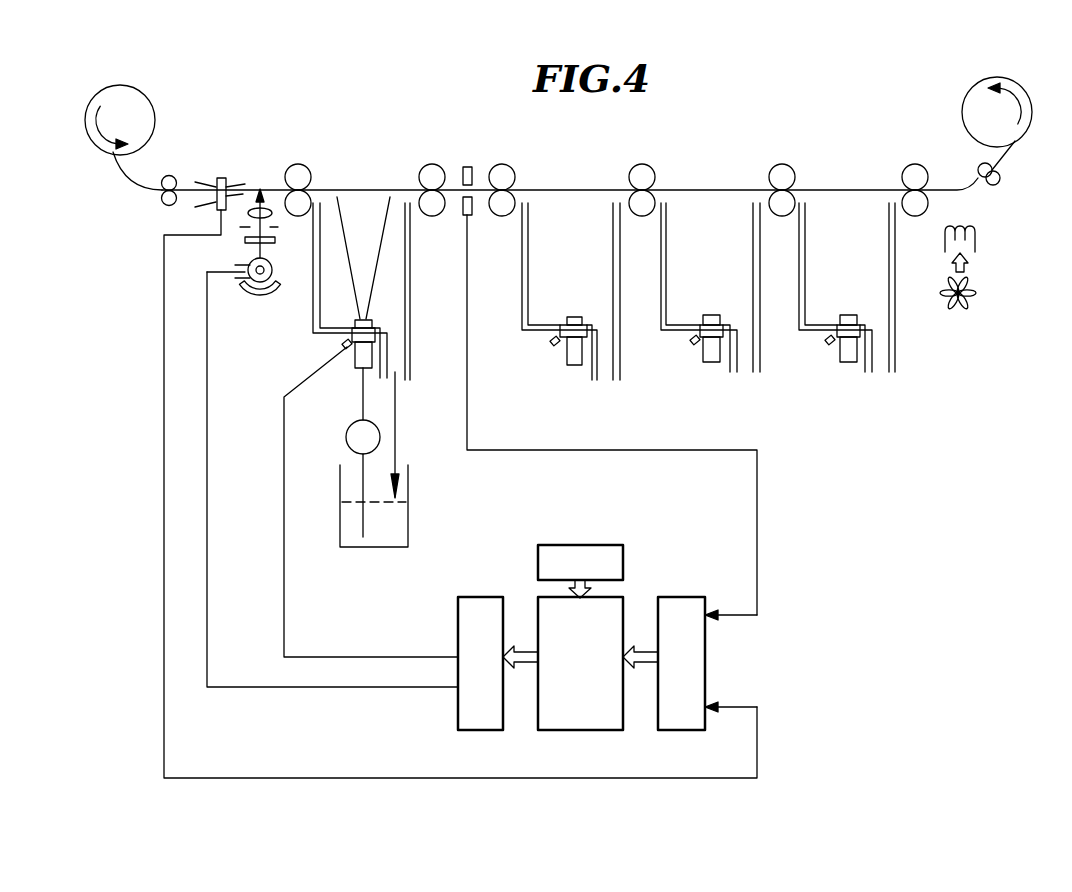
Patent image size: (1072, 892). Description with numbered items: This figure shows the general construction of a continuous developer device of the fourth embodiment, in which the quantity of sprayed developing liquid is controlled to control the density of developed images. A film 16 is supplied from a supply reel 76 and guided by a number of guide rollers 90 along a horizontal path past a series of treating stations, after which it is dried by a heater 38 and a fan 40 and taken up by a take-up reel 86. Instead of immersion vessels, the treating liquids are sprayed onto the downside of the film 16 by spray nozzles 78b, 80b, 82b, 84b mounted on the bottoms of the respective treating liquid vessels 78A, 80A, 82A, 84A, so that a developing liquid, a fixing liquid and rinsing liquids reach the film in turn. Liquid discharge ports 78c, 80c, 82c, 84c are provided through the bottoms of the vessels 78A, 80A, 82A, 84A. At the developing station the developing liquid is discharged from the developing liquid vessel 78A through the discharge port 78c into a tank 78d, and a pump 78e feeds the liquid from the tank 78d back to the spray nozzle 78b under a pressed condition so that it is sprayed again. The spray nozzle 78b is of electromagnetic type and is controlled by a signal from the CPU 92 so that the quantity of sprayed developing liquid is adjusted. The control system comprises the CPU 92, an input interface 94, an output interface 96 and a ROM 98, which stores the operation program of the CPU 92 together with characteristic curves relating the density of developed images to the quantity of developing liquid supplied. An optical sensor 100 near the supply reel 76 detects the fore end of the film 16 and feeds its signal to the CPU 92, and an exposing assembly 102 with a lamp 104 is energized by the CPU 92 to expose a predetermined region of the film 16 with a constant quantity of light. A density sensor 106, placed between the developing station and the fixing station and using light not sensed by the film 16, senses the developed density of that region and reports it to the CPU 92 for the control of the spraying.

The film 16 is at (1008, 157).
The heater 38 is at (977, 240).
The fan 40 is at (977, 288).
The supply reel 76 is at (152, 100).
The developing liquid vessel 78A is at (412, 300).
The spray nozzle 78b is at (353, 362).
The liquid discharge port 78c is at (392, 357).
The tank 78d is at (407, 523).
The pump 78e is at (347, 442).
The fixing liquid vessel 80A is at (520, 313).
The spray nozzle 80b is at (562, 358).
The liquid discharge port 80c is at (607, 373).
The first rinsing liquid vessel 82A is at (660, 313).
The spray nozzle 82b is at (702, 357).
The liquid discharge port 82c is at (745, 368).
The second rinsing liquid vessel 84A is at (800, 320).
The spray nozzle 84b is at (837, 357).
The liquid discharge port 84c is at (882, 367).
The take-up reel 86 is at (968, 92).
The guide rollers 90 is at (303, 167).
The CPU 92 is at (577, 730).
The input interface 94 is at (693, 730).
The output interface 96 is at (472, 732).
The ROM 98 is at (625, 557).
The optical sensor 100 is at (236, 194).
The assembly 102 is at (245, 306).
The lamp 104 is at (262, 282).
The density sensor 106 is at (472, 198).